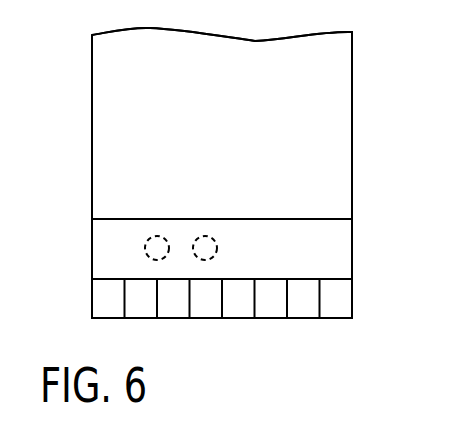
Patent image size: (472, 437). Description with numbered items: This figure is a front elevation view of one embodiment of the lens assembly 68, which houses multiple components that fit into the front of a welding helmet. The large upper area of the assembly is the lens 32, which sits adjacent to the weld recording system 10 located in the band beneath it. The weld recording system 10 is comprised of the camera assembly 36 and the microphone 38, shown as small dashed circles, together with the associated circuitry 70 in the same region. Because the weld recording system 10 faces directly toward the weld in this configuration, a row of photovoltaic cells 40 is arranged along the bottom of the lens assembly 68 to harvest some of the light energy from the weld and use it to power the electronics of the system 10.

The weld recording system 10 is at (364, 237).
The lens 32 is at (108, 70).
The camera assembly 36 is at (209, 244).
The microphone 38 is at (162, 244).
The photovoltaic cells 40 is at (236, 305).
The lens assembly 68 is at (79, 172).
The associated circuitry 70 is at (322, 218).